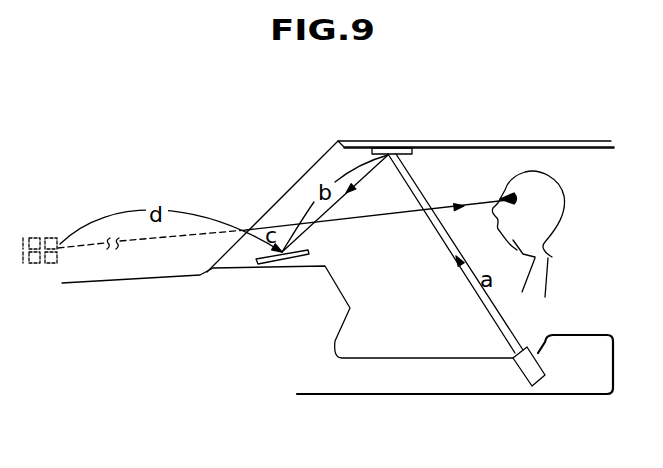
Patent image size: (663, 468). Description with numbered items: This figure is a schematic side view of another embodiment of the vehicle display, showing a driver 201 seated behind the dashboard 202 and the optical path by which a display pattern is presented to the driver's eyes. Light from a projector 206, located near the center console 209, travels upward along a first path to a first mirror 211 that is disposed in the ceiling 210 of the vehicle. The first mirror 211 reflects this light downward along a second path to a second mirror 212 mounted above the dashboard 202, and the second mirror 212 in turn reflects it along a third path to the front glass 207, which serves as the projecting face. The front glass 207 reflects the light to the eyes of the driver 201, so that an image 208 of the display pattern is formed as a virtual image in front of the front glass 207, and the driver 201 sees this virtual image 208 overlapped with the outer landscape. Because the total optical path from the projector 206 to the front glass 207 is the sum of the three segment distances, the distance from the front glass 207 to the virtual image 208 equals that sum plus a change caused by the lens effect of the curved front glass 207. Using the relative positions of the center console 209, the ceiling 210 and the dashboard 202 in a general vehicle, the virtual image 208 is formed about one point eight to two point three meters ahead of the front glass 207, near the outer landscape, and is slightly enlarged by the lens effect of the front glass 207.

The viewer (driver) 201 is at (551, 259).
The dashboard 202 is at (323, 266).
The projector 206 is at (521, 372).
The front glass 207 is at (315, 166).
The virtual image 208 is at (35, 233).
The center console 209 is at (588, 340).
The ceiling 210 is at (553, 143).
The first mirror 211 is at (393, 148).
The second mirror 212 is at (262, 266).